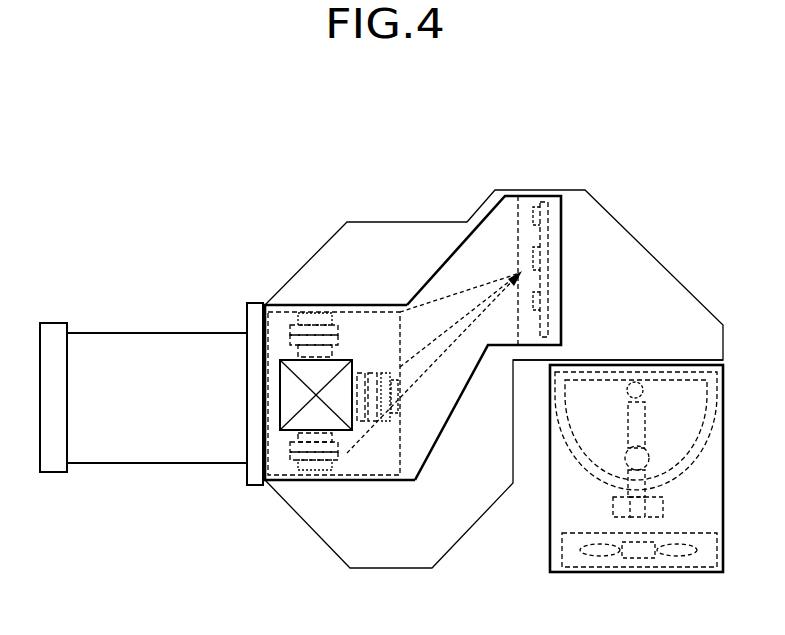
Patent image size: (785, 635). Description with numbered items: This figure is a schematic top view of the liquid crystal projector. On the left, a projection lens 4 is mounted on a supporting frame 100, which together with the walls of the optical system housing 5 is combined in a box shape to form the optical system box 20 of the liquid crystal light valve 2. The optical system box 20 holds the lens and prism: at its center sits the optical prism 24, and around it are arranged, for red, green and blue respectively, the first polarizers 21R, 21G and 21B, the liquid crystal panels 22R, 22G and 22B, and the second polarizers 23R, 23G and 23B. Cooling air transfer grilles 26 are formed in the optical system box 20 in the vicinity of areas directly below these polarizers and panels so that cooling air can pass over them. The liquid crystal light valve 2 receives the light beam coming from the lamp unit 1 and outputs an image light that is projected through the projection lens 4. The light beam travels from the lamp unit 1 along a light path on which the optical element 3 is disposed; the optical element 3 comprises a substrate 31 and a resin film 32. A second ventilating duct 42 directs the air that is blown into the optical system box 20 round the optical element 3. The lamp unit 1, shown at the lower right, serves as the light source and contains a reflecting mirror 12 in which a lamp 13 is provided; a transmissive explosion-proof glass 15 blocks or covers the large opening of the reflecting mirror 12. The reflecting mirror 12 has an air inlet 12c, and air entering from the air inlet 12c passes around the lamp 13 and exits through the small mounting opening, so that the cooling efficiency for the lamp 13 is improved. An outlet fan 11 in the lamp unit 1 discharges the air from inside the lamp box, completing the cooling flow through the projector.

The lamp unit 1 is at (548, 553).
The liquid crystal light valve 2 is at (277, 468).
The optical element 3 is at (549, 225).
The projection lens 4 is at (105, 363).
The housing 5 is at (277, 290).
The outlet fan 11 is at (600, 552).
The reflecting mirror 12 is at (583, 465).
The air inlet 12c is at (636, 383).
The lamp 13 is at (650, 457).
The transmissive explosion-proof glass 15 is at (683, 372).
The optical system box 20 is at (278, 303).
The first polarizer 21R is at (334, 350).
The first polarizer 21G is at (360, 421).
The first polarizer 21B is at (296, 435).
The liquid crystal panel 22R is at (337, 335).
The liquid crystal panel 22G is at (372, 421).
The liquid crystal panel 22B is at (292, 447).
The second polarizer 23R is at (306, 313).
The second polarizer 23G is at (388, 421).
The second polarizer 23B is at (298, 466).
The optical prism 24 is at (286, 398).
The cooling air transfer grilles 26 is at (331, 313).
The substrate 31 is at (549, 277).
The resin film 32 is at (524, 212).
The second ventilating duct 42 is at (470, 237).
The supporting frame 100 is at (260, 323).